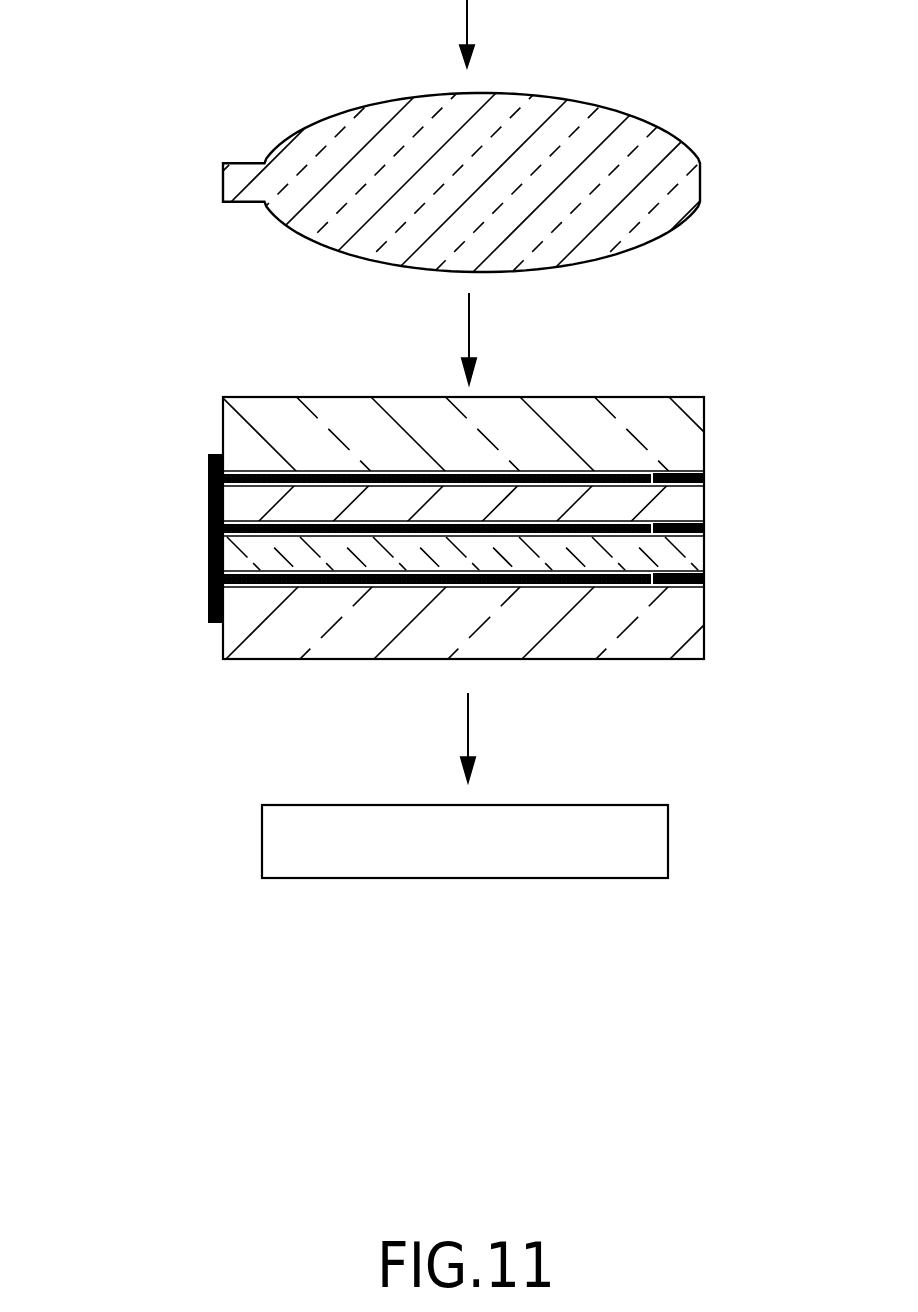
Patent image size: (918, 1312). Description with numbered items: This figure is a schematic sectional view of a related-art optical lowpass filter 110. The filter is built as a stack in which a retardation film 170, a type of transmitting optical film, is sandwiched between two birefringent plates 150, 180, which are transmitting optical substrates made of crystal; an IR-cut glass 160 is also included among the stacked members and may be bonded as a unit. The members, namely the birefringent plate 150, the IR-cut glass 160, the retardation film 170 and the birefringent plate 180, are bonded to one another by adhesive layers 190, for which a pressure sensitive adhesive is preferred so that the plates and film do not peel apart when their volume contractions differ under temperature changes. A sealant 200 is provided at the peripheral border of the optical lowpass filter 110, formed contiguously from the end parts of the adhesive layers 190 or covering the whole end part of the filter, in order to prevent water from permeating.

The optical lowpass filter 110 is at (757, 321).
The birefringent plate 150 is at (690, 444).
The IR-cut glass 160 is at (690, 507).
The retardation film 170 is at (690, 557).
The birefringent plate 180 is at (690, 615).
The adhesive layers 190 is at (227, 580).
The sealant 200 is at (208, 599).